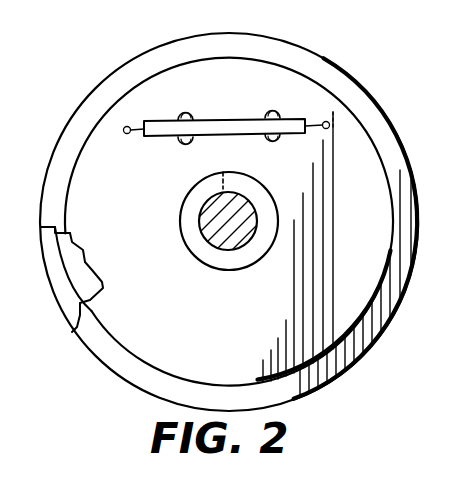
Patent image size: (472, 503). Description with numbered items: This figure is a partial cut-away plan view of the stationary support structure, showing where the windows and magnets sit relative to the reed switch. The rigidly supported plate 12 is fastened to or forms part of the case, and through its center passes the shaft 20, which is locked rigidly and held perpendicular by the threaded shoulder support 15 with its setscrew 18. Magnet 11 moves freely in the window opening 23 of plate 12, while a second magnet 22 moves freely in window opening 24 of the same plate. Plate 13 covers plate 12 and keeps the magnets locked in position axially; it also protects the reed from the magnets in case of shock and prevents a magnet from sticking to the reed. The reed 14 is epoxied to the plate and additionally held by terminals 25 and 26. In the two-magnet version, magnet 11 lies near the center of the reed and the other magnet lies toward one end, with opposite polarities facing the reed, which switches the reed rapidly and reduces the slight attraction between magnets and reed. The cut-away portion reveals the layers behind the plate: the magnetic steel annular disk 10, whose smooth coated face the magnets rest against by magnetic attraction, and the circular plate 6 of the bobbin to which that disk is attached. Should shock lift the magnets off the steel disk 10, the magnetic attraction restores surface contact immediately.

The circular plate 6 is at (71, 330).
The magnetic steel annular disk 10 is at (82, 282).
The magnet 11 is at (186, 113).
The plate 12 is at (128, 62).
The plate 13 is at (100, 138).
The reed 14 is at (208, 121).
The threaded shoulder support 15 is at (221, 264).
The setscrew 18 is at (226, 175).
The shaft 20 is at (212, 235).
The second magnet 22 is at (272, 114).
The window opening 23 is at (186, 143).
The window opening 24 is at (268, 115).
The terminal 25 is at (128, 134).
The terminal 26 is at (330, 126).